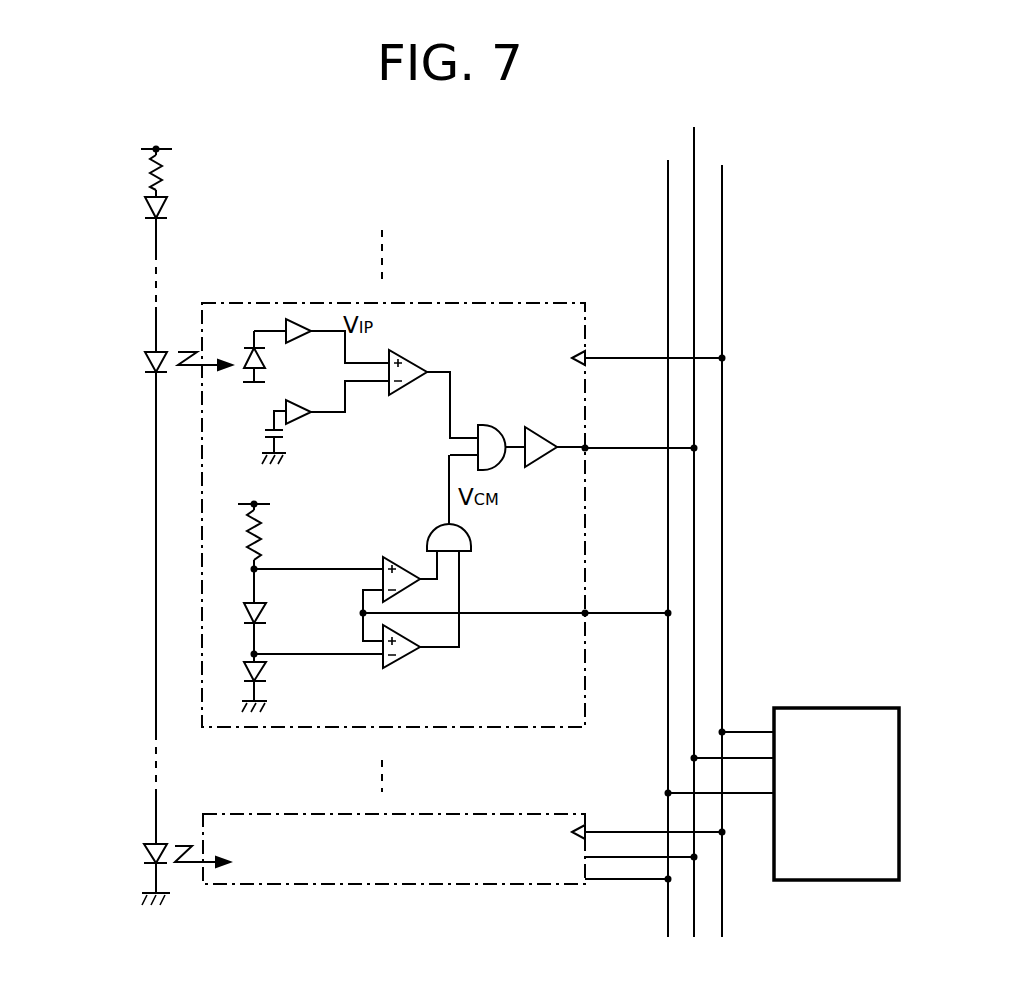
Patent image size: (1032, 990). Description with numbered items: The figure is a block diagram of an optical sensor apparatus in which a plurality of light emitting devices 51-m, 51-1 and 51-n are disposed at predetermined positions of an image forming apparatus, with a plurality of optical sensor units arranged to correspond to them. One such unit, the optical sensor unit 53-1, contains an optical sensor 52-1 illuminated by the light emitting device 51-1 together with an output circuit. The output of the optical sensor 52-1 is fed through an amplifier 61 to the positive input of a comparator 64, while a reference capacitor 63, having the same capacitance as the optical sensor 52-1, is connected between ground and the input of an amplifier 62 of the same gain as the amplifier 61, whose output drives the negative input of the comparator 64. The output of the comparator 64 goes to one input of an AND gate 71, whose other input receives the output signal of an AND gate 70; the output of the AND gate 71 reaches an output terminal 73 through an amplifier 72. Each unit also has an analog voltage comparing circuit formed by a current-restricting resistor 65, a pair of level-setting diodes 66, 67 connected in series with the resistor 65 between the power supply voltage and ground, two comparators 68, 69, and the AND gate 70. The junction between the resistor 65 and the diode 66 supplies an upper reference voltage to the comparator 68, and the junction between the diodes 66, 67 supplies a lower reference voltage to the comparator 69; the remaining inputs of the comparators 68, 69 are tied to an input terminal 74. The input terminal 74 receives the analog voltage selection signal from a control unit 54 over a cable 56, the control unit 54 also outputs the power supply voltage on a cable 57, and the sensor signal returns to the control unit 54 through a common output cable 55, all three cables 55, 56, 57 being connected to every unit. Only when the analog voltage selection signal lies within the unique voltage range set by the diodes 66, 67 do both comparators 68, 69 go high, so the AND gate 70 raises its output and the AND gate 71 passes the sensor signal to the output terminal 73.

The light emitting device 51-m is at (168, 207).
The light emitting device 51-1 is at (142, 368).
The light emitting device 51-n is at (140, 855).
The optical sensor 52-1 is at (246, 356).
The optical sensor unit 53-1 is at (545, 303).
The control unit 54 is at (853, 708).
The common output cable 55 is at (694, 541).
The cable 56 is at (668, 580).
The cable 57 is at (722, 632).
The amplifier 61 is at (295, 342).
The amplifier 62 is at (310, 420).
The reference capacitor 63 is at (263, 436).
The comparator 64 is at (428, 362).
The resistor 65 is at (262, 540).
The diode 66 is at (268, 614).
The diode 67 is at (265, 673).
The comparator 68 is at (395, 557).
The comparator 69 is at (413, 668).
The AND gate 70 is at (469, 548).
The AND gate 71 is at (488, 425).
The amplifier 72 is at (545, 467).
The output terminal 73 is at (587, 445).
The input terminal 74 is at (587, 616).